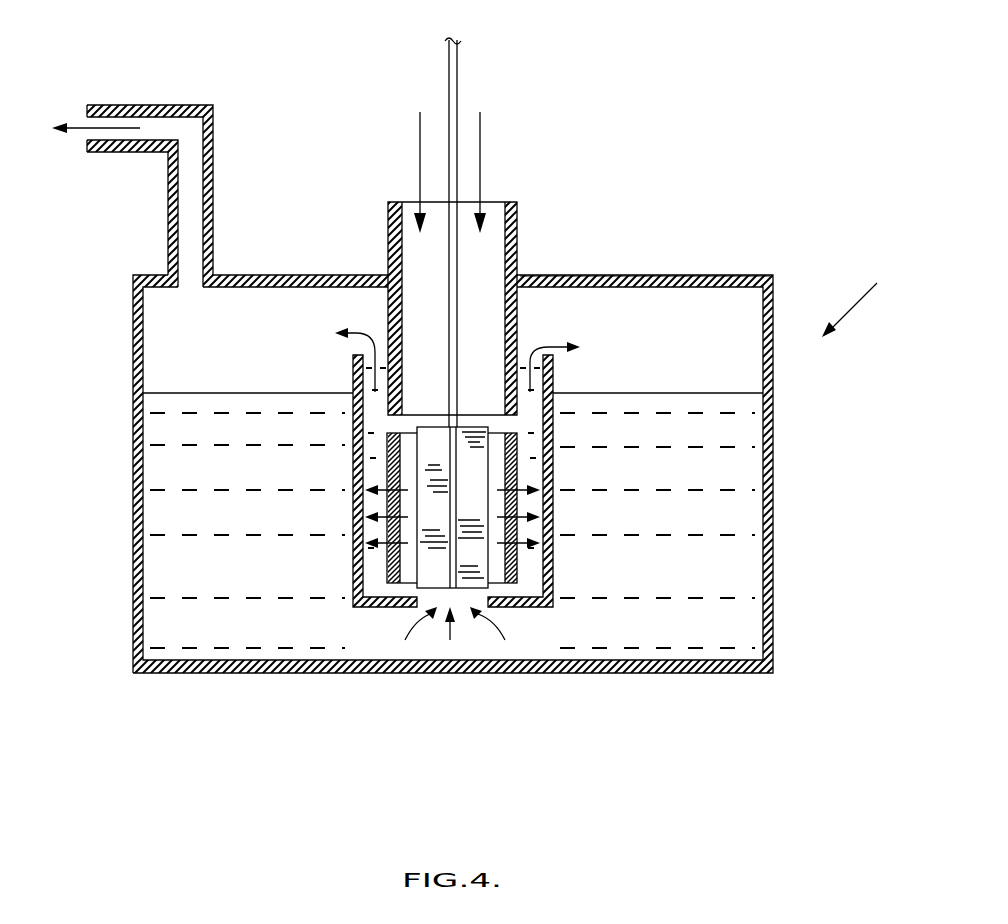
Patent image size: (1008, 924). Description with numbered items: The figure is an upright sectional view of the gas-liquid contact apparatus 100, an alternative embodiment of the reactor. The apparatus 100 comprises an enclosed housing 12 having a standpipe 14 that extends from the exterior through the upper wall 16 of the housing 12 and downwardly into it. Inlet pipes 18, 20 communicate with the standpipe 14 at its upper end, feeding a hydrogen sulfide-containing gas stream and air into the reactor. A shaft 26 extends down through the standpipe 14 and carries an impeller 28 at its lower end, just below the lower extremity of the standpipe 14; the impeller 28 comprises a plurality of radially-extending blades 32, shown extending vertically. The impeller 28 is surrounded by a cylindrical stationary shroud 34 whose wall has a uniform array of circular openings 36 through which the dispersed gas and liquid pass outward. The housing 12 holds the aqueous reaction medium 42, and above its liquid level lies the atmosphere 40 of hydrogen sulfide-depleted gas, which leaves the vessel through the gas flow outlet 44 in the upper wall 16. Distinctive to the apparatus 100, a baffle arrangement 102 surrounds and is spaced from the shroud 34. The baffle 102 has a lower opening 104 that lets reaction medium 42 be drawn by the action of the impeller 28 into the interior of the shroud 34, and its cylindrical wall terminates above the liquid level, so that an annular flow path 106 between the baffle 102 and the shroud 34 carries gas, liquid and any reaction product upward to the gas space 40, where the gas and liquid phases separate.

The housing 12 is at (775, 593).
The standpipe 14 is at (517, 246).
The upper wall 16 is at (630, 277).
The inlet pipe 18 is at (420, 165).
The inlet pipe 20 is at (480, 163).
The shaft 26 is at (452, 300).
The impeller 28 is at (470, 508).
The blades 32 is at (450, 545).
The shroud 34 is at (388, 478).
The circular openings 36 is at (517, 567).
The atmosphere 40 is at (162, 335).
The reaction medium 42 is at (733, 492).
The gas flow outlet 44 is at (190, 148).
The apparatus 100 is at (868, 294).
The baffle arrangement 102 is at (553, 428).
The lower opening 104 is at (353, 413).
The annular gap 106 is at (353, 440).